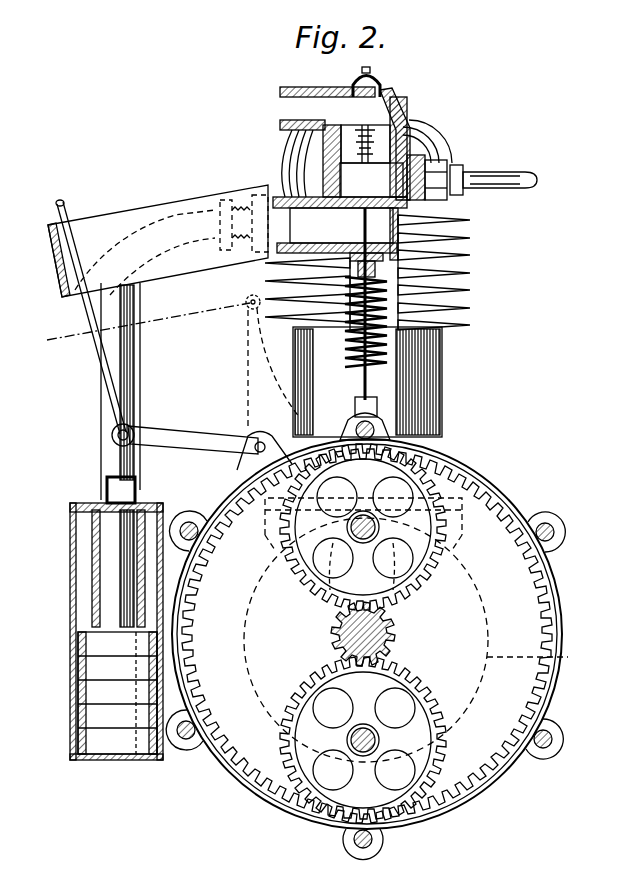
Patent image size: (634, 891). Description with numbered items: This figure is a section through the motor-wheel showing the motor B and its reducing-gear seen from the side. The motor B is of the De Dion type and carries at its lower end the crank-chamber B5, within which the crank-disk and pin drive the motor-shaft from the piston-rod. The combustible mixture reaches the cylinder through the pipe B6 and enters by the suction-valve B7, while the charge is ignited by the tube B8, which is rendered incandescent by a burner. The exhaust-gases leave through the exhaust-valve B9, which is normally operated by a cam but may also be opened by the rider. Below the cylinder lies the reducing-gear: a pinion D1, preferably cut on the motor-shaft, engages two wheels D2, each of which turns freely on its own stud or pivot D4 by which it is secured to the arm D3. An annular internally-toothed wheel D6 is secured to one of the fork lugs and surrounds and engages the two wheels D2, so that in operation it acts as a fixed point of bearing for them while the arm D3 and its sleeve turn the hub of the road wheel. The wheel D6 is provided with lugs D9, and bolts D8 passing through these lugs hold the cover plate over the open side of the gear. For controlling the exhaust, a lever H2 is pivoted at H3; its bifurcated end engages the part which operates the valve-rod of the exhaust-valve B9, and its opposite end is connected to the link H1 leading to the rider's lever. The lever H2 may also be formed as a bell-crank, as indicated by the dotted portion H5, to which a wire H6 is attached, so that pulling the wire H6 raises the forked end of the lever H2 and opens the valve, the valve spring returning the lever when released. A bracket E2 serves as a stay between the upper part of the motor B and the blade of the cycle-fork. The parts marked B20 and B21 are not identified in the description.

The motor B is at (367, 324).
The crank-chamber B5 is at (568, 657).
The pipe B6 is at (290, 112).
The suction-valve B7 is at (394, 166).
The tube B8 is at (498, 174).
The exhaust-valve B9 is at (420, 163).
The column B20 is at (142, 300).
The auxiliary cylinder B21 is at (78, 680).
The bracket E2 is at (158, 241).
The link H1 is at (97, 357).
The lever H2 is at (196, 447).
The pivot H3 is at (257, 450).
The dotted portion H5 is at (250, 360).
The wire H6 is at (212, 314).
The pinion D1 is at (392, 632).
The wheels D2 is at (418, 530).
The arm D3 is at (318, 616).
The stud or pivot D4 is at (352, 529).
The annular internally-toothed wheel D6 is at (232, 770).
The bolts D8 is at (545, 750).
The lugs D9 is at (549, 737).